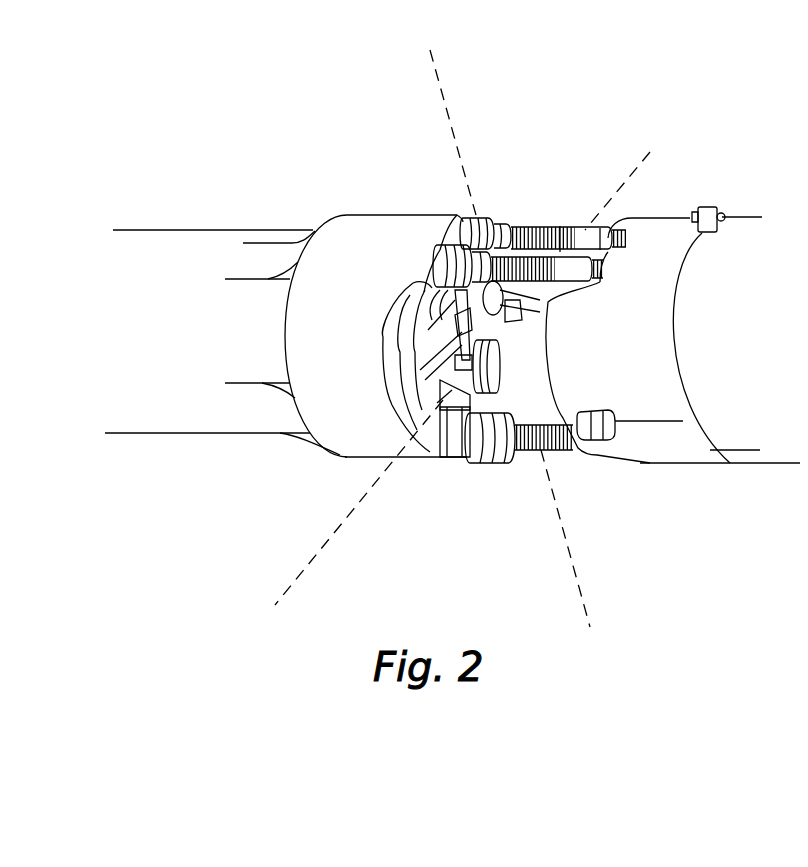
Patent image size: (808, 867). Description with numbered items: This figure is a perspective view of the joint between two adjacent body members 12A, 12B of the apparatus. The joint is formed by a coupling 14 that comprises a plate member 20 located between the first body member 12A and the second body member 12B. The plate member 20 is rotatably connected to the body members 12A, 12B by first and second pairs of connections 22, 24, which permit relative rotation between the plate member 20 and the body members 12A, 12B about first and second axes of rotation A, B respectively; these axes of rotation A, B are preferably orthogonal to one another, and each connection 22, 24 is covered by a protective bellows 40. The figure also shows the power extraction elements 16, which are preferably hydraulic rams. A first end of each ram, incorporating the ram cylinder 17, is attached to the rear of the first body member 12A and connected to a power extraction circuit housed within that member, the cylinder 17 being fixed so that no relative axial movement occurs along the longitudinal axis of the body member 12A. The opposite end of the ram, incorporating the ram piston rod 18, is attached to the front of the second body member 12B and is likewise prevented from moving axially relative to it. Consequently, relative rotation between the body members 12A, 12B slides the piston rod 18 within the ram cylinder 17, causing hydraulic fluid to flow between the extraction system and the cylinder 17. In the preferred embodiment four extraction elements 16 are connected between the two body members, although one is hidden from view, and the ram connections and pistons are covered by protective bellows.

The first body member 12A is at (678, 232).
The second body member 12B is at (163, 245).
The coupling 14 is at (441, 386).
The power extraction elements 16 is at (522, 216).
The ram cylinder 17 is at (600, 232).
The ram piston rod 18 is at (560, 226).
The plate member 20 is at (540, 300).
The first connections 22 is at (565, 290).
The second connections 24 is at (446, 298).
The protective bellows 40 is at (454, 314).
The first axis of rotation A is at (653, 147).
The second axis of rotation B is at (433, 63).